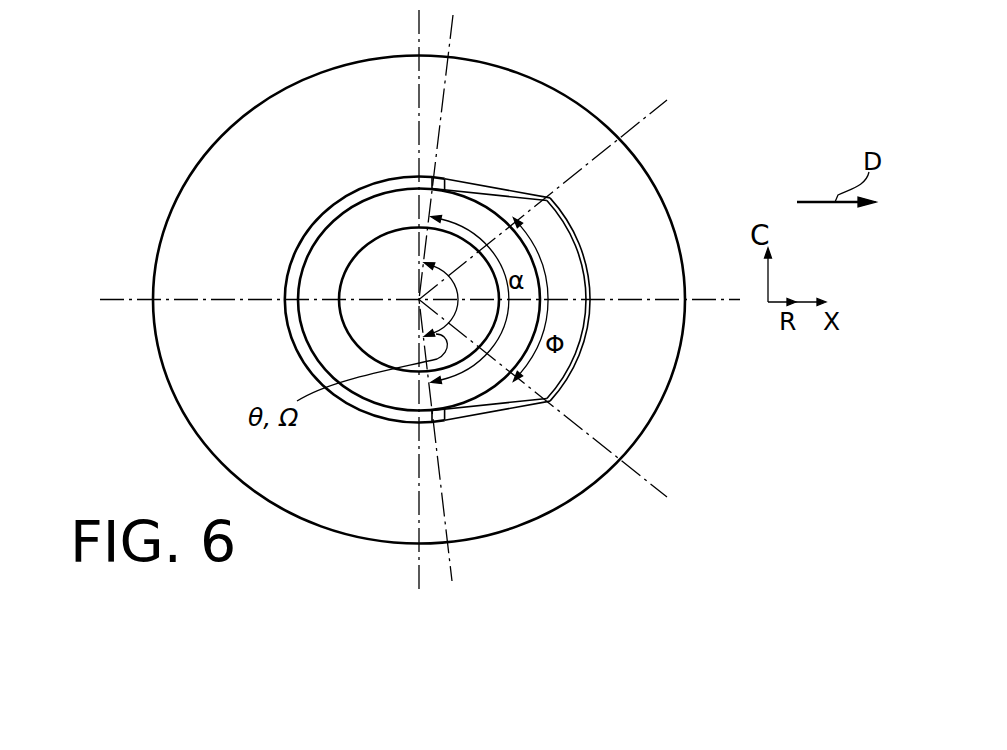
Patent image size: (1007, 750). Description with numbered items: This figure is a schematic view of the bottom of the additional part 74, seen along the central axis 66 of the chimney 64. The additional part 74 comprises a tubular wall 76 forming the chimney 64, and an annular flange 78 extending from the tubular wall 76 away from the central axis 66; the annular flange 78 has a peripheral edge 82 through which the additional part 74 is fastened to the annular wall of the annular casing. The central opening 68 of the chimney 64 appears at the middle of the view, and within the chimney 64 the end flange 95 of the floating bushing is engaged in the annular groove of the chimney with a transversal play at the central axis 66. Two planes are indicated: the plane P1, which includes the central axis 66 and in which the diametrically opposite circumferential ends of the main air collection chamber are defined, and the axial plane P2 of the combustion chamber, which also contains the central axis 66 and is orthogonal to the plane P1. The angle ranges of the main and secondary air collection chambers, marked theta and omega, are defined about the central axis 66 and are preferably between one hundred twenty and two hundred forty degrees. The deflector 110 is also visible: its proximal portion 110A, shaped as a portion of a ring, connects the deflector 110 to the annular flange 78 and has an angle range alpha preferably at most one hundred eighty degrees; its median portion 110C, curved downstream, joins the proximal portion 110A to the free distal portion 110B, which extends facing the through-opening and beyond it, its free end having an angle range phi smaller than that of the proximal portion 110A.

The additional part 74 is at (703, 60).
The peripheral edge 82 is at (186, 181).
The annular flange 78 is at (190, 247).
The chimney 64 is at (290, 300).
The tubular wall 76 is at (283, 276).
The central bore 68 is at (398, 248).
The central axis 66 is at (419, 300).
The end flange 95 is at (318, 328).
The deflector 110 is at (586, 411).
The proximal portion 110A is at (440, 423).
The free distal portion 110B is at (542, 410).
The median portion 110C is at (488, 388).
The plane P1 is at (418, 587).
The axial plane P2 is at (104, 300).